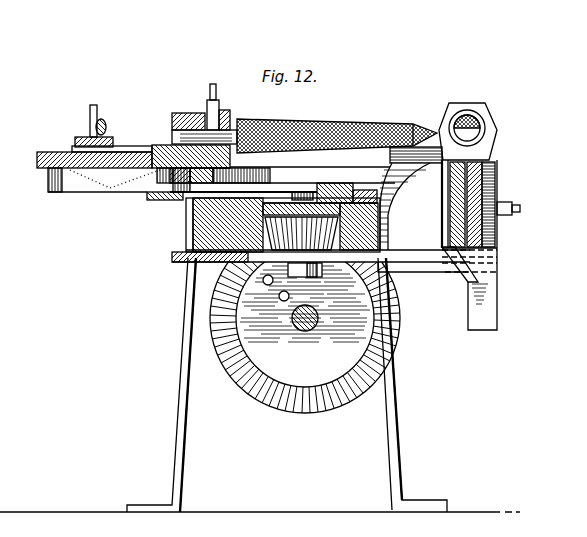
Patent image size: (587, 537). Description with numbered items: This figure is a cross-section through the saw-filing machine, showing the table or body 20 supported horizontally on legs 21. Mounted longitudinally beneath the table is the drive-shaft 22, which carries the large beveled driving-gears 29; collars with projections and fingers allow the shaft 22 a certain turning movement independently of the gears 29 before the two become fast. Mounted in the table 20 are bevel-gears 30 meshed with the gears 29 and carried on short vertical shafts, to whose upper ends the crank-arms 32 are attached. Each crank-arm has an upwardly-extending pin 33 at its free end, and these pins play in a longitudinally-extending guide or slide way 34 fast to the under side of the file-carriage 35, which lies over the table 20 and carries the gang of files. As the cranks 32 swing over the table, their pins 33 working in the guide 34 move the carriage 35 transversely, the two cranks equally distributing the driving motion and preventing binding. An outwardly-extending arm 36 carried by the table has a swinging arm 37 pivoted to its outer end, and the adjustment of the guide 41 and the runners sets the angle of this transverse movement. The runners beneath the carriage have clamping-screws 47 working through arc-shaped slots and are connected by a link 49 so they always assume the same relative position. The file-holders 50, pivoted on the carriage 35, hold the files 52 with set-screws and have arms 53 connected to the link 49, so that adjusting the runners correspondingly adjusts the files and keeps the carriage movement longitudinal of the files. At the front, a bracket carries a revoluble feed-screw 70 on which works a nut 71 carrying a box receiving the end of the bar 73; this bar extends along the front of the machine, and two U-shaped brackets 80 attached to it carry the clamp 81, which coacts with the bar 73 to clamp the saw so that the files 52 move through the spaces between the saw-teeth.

The table or body 20 is at (200, 223).
The legs 21 is at (398, 420).
The drive-shaft 22 is at (305, 322).
The large beveled driving-gears 29 is at (397, 333).
The bevel-gears 30 is at (270, 223).
The crank-arms 32 is at (270, 188).
The pins 33 is at (145, 195).
The guide or slide way 34 is at (163, 173).
The file-carriage 35 is at (115, 160).
The outwardly-extending arm 36 is at (433, 272).
The swinging arm 37 is at (405, 253).
The guide 41 is at (395, 182).
The clamping-screws 47 is at (97, 132).
The link 49 is at (83, 136).
The file-holders 50 is at (185, 113).
The files 52 is at (327, 132).
The arms 53 is at (140, 147).
The feed-screw 70 is at (470, 130).
The nut 71 is at (488, 138).
The bar 73 is at (480, 178).
The U-shaped brackets 80 is at (497, 284).
The clamp 81 is at (488, 173).